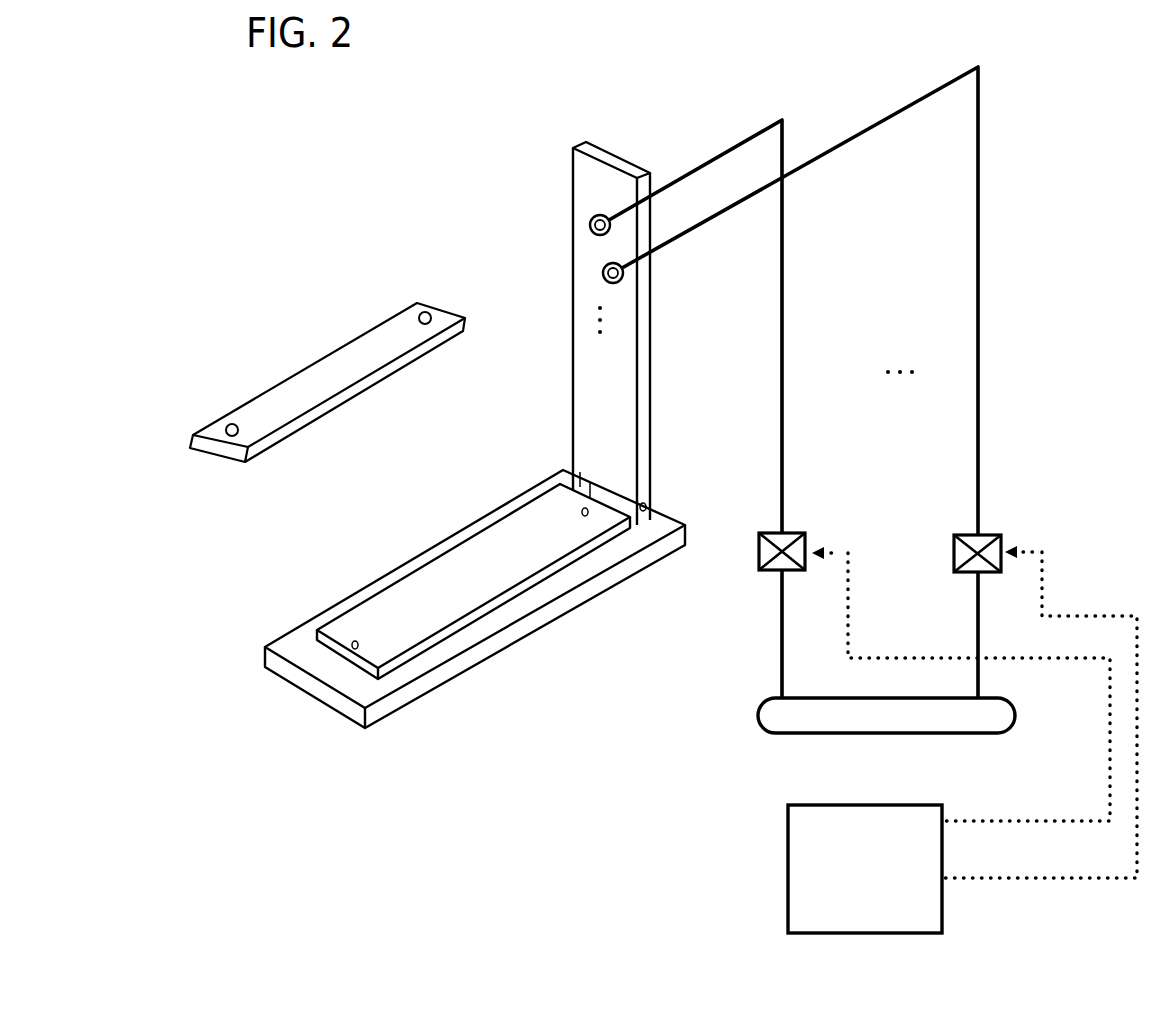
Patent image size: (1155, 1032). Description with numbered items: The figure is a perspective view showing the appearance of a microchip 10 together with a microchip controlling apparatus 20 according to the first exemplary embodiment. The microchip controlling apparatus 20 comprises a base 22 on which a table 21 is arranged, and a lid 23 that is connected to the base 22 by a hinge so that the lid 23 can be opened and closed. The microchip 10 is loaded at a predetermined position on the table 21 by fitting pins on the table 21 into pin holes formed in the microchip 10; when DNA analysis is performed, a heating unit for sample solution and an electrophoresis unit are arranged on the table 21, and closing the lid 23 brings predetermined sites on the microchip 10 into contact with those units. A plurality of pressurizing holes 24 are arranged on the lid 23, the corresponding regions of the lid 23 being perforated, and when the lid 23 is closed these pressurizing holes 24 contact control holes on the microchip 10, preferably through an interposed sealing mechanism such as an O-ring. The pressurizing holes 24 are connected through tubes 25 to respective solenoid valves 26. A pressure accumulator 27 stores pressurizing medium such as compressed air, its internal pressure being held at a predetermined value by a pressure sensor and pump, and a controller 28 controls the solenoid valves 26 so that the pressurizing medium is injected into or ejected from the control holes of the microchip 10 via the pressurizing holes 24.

The microchip 10 is at (334, 346).
The microchip controlling apparatus 20 is at (1071, 110).
The table 21 is at (352, 620).
The base 22 is at (300, 677).
The lid 23 is at (615, 155).
The pressurizing holes 24 is at (603, 267).
The tubes 25 is at (870, 124).
The solenoid valves 26 is at (949, 531).
The pressure accumulator 27 is at (1015, 716).
The controller 28 is at (943, 805).